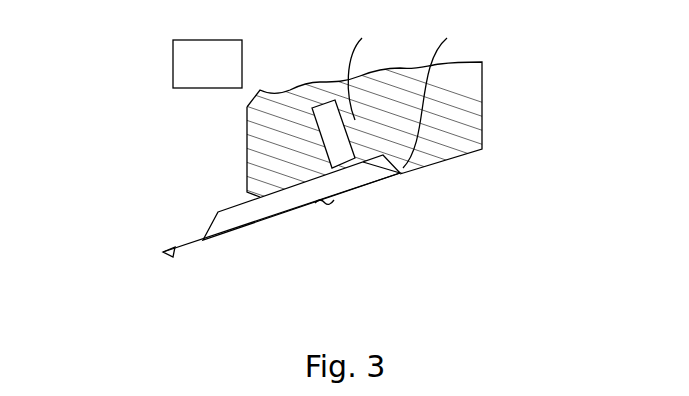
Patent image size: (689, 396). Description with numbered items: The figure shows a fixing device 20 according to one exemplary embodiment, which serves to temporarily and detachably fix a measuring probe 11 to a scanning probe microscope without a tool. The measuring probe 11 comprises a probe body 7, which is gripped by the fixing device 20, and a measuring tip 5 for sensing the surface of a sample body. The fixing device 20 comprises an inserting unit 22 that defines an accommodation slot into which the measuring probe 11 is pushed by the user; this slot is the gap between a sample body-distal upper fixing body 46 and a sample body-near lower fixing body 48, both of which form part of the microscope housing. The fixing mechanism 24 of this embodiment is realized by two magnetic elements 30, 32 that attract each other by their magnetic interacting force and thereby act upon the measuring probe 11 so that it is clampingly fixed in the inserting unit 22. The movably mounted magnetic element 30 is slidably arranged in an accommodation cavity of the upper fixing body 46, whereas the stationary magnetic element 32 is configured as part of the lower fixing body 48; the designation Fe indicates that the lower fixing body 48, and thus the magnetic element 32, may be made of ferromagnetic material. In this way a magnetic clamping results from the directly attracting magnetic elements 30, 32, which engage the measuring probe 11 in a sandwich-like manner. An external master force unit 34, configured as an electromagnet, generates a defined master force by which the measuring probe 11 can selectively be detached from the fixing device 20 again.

The measuring tip 5 is at (173, 255).
The probe body 7 is at (233, 218).
The measuring probe 11 is at (192, 214).
The fixing device 20 is at (505, 97).
The inserting unit 22 is at (317, 205).
The fixing mechanism 24 is at (412, 95).
The movably mounted magnetic element 30 is at (319, 130).
The stationary magnetic element 32 is at (395, 177).
The external master force unit 34 is at (172, 56).
The upper fixing body 46 is at (463, 145).
The lower fixing body 48 is at (335, 203).
The ferromagnetic material designation Fe is at (357, 193).